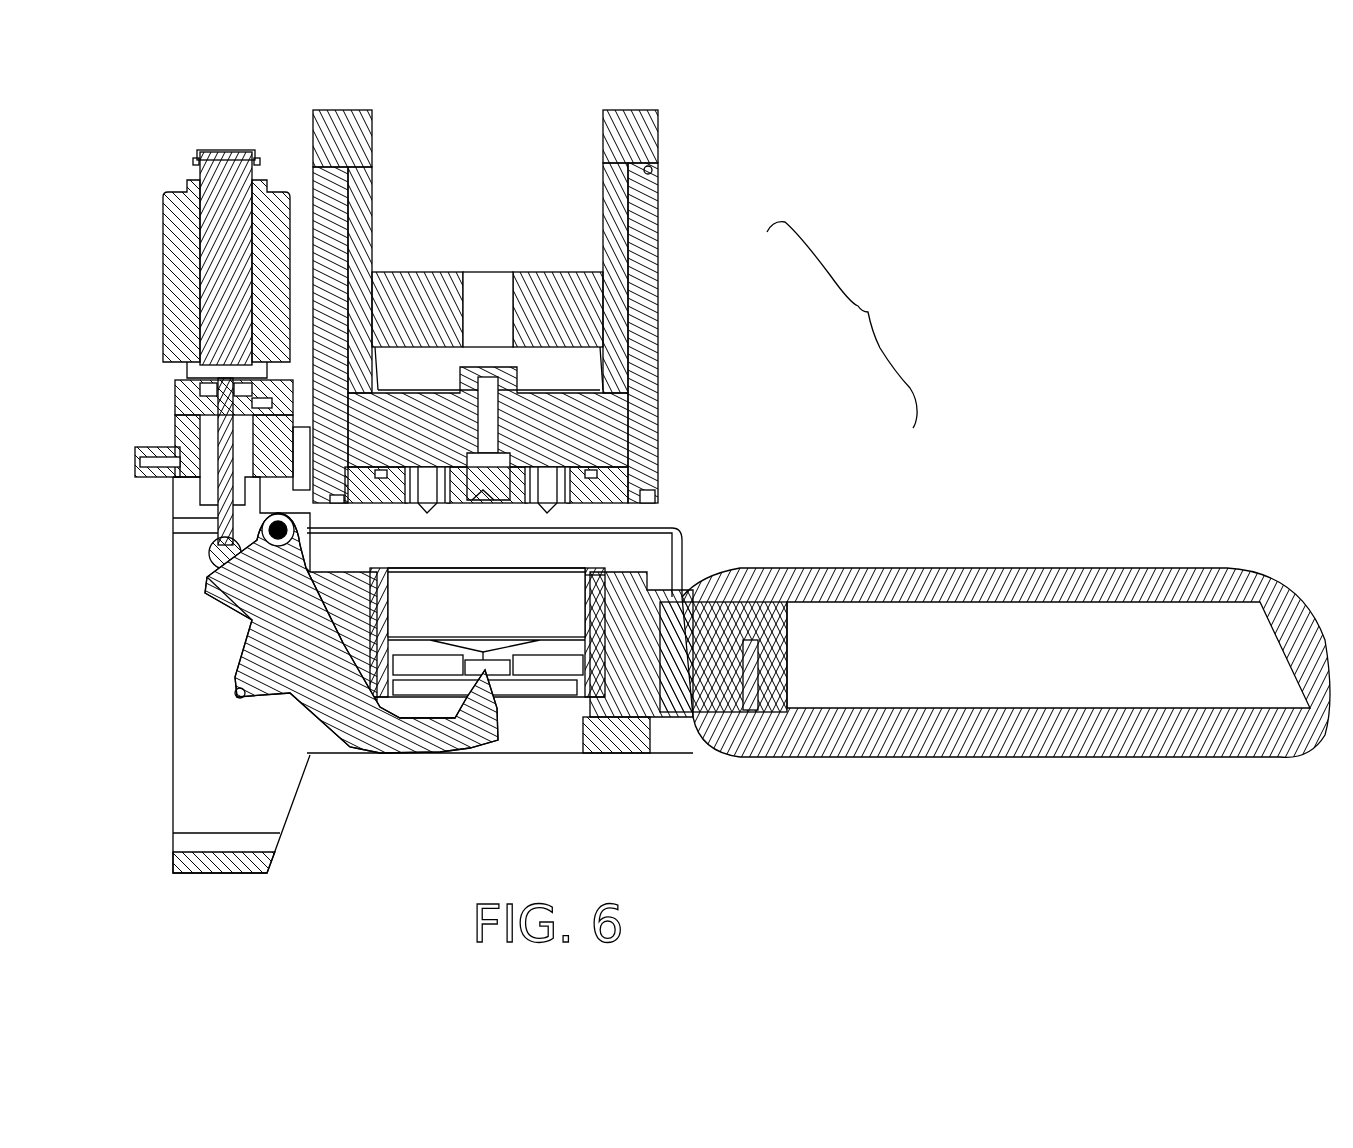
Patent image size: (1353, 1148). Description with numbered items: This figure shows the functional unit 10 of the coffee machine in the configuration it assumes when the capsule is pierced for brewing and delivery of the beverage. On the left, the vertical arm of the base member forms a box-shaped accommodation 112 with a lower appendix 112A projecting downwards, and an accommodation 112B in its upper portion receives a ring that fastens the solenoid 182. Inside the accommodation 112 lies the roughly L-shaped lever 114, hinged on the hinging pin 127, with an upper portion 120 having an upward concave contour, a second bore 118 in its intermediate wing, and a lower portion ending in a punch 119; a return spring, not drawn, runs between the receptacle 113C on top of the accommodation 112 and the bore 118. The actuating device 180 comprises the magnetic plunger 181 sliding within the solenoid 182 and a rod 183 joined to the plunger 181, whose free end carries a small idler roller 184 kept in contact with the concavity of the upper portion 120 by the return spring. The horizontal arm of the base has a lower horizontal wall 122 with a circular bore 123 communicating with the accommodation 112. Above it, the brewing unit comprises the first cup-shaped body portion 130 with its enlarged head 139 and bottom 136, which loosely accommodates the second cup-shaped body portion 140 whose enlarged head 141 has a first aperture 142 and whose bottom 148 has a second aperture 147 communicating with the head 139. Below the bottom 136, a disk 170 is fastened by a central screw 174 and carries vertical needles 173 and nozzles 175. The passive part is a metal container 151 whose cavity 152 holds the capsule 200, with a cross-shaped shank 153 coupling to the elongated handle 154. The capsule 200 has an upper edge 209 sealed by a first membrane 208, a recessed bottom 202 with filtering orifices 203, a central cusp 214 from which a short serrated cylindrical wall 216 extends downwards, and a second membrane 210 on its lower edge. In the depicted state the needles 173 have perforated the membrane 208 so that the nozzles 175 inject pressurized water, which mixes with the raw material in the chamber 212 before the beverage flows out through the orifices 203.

The functional unit 10 is at (842, 325).
The box-shaped accommodation 112 is at (190, 790).
The lower appendix 112A is at (260, 858).
The accommodation 112B is at (180, 388).
The receptacle 113C is at (140, 463).
The lever 114 is at (235, 636).
The second bore 118 is at (237, 698).
The punch 119 is at (455, 722).
The upper portion 120 is at (260, 548).
The lower horizontal wall 122 is at (630, 740).
The circular bore 123 is at (500, 740).
The hinging pin 127 is at (250, 613).
The first cup-shaped body portion 130 is at (663, 207).
The bottom 136 is at (630, 470).
The enlarged head 139 is at (655, 172).
The second cup-shaped body portion 140 is at (668, 138).
The enlarged head 141 is at (343, 110).
The first aperture 142 is at (592, 110).
The second aperture 147 is at (495, 277).
The bottom 148 is at (403, 273).
The metal container 151 is at (377, 573).
The cavity 152 is at (583, 697).
The cross-shaped shank 153 is at (700, 627).
The elongated handle 154 is at (1010, 588).
The disk 170 is at (636, 476).
The vertical needles 173 is at (630, 443).
The central screw 174 is at (565, 415).
The vertical nozzles 175 is at (657, 485).
The actuating device 180 is at (238, 140).
The plunger 181 is at (225, 190).
The solenoid 182 is at (178, 248).
The rod 183 is at (220, 420).
The idler roller 184 is at (208, 552).
The capsule 200 is at (488, 610).
The bottom 202 is at (385, 655).
The filtering orifices 203 is at (395, 740).
The first membrane 208 is at (537, 570).
The upper edge 209 is at (600, 575).
The second membrane 210 is at (555, 693).
The chamber 212 is at (540, 690).
The central cusp 214 is at (497, 637).
The serrated cylindrical wall 216 is at (520, 697).